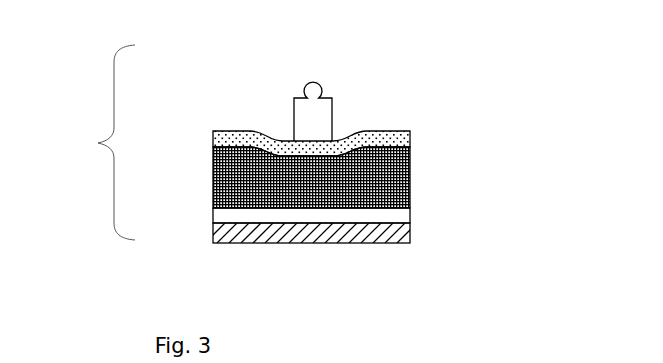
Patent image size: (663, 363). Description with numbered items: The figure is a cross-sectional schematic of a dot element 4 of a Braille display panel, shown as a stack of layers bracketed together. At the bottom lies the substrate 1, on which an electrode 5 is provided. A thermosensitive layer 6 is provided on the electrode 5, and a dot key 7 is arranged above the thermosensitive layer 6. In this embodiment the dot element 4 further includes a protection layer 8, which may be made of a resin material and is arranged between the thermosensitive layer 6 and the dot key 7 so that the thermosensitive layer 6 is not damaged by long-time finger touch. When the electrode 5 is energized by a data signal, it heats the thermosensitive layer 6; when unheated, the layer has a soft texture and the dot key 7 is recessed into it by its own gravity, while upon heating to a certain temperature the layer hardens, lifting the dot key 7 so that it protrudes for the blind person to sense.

The substrate 1 is at (213, 238).
The dot element 4 is at (105, 142).
The electrode 5 is at (213, 212).
The thermosensitive layer 6 is at (213, 183).
The dot key 7 is at (305, 83).
The protection layer 8 is at (213, 142).